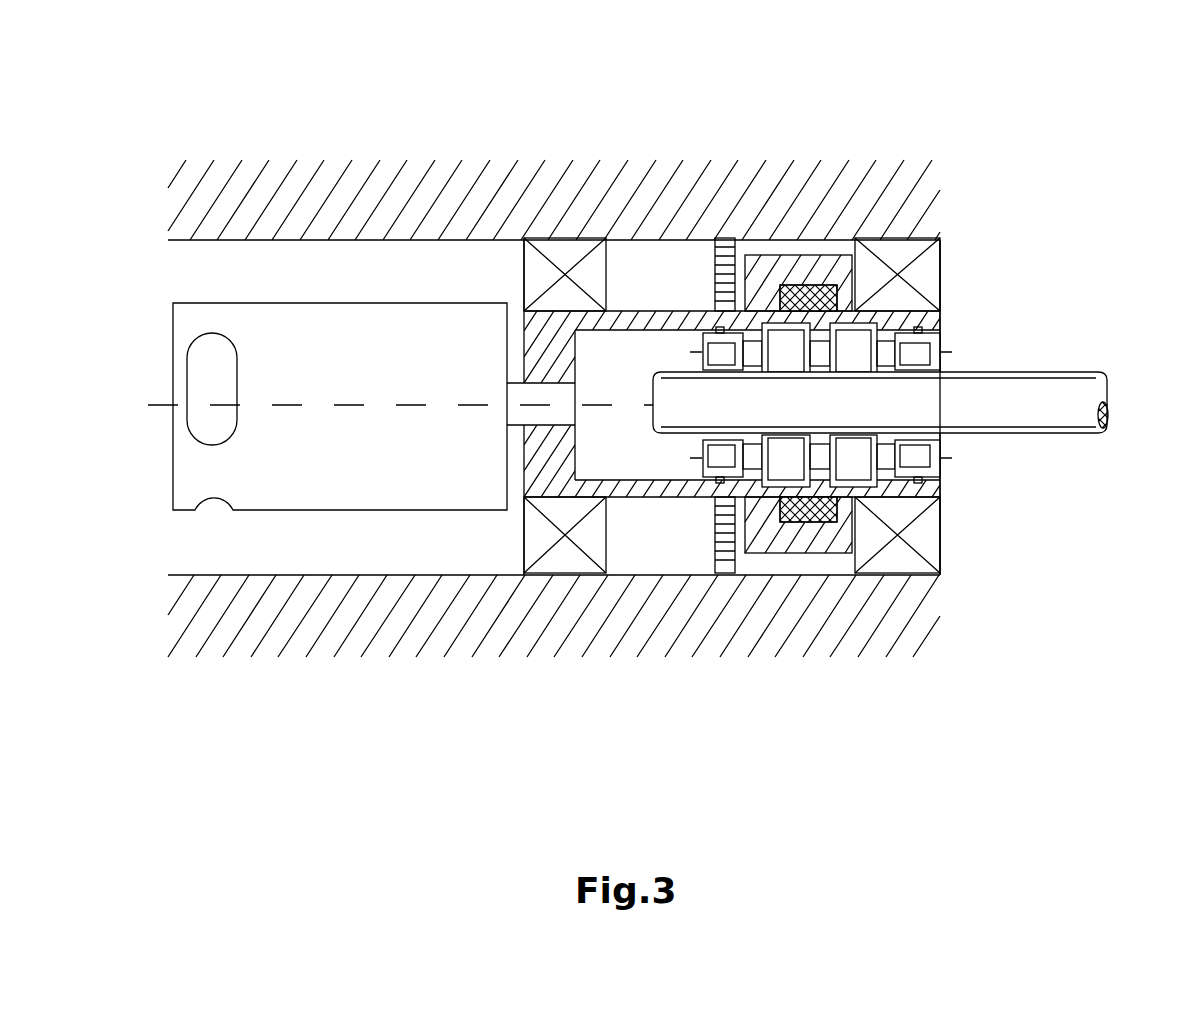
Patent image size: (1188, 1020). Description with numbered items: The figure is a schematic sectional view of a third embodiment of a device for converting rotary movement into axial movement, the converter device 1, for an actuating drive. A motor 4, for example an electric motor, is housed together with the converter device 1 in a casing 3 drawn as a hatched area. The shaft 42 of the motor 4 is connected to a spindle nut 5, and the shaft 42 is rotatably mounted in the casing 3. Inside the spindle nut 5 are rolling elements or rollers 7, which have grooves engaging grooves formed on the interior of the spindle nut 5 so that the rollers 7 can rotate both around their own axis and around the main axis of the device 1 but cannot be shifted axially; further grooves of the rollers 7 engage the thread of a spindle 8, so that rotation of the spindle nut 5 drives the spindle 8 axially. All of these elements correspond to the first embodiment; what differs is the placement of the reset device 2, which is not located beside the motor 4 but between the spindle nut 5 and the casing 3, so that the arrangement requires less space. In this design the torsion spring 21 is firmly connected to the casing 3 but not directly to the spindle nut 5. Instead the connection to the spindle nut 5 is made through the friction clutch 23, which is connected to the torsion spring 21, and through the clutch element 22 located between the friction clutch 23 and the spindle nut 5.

The converter device 1 is at (1103, 497).
The reset device 2 is at (792, 110).
The casing 3 is at (253, 195).
The motor 4 is at (185, 437).
The shaft 42 is at (528, 397).
The spindle nut 5 is at (670, 487).
The rolling elements or rollers 7 is at (938, 352).
The spindle 8 is at (1055, 388).
The torsion spring 21 is at (717, 237).
The clutch element 22 is at (838, 510).
The friction clutch 23 is at (825, 262).